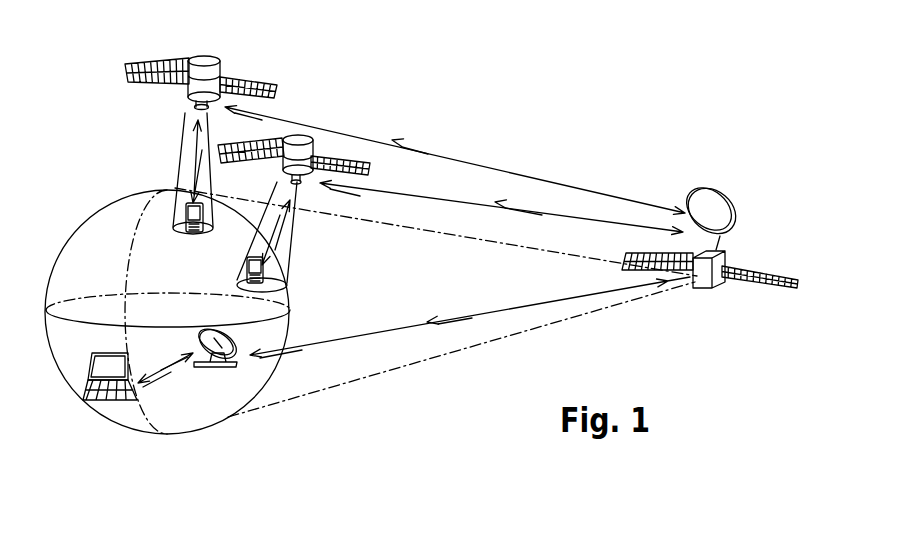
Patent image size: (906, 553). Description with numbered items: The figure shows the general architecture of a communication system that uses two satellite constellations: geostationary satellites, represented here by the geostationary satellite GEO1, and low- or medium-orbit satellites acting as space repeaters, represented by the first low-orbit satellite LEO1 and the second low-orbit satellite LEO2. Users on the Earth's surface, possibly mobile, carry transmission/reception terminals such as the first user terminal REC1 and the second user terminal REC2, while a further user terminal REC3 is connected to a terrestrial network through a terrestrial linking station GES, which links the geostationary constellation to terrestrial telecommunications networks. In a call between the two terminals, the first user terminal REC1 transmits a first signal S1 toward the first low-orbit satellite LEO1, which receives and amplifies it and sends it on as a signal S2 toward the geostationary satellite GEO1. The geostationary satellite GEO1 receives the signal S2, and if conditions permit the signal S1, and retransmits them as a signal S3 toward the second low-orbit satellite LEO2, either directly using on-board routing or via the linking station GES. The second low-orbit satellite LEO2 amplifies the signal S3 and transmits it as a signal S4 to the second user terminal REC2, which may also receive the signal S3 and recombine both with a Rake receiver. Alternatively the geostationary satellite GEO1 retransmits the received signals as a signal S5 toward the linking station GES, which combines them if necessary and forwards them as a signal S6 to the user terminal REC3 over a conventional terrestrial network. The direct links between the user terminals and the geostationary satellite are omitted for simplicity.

The first low-orbit satellite LEO1 is at (203, 62).
The second low-orbit satellite LEO2 is at (308, 141).
The geostationary satellite GEO1 is at (712, 208).
The first user terminal REC1 is at (187, 213).
The second user terminal REC2 is at (265, 272).
The third user terminal REC3 is at (111, 401).
The terrestrial linking station GES is at (220, 368).
The first signal S1 is at (183, 147).
The second signal S2 is at (497, 167).
The third signal S3 is at (427, 200).
The fourth signal S4 is at (295, 240).
The fifth signal S5 is at (400, 333).
The sixth signal S6 is at (178, 385).